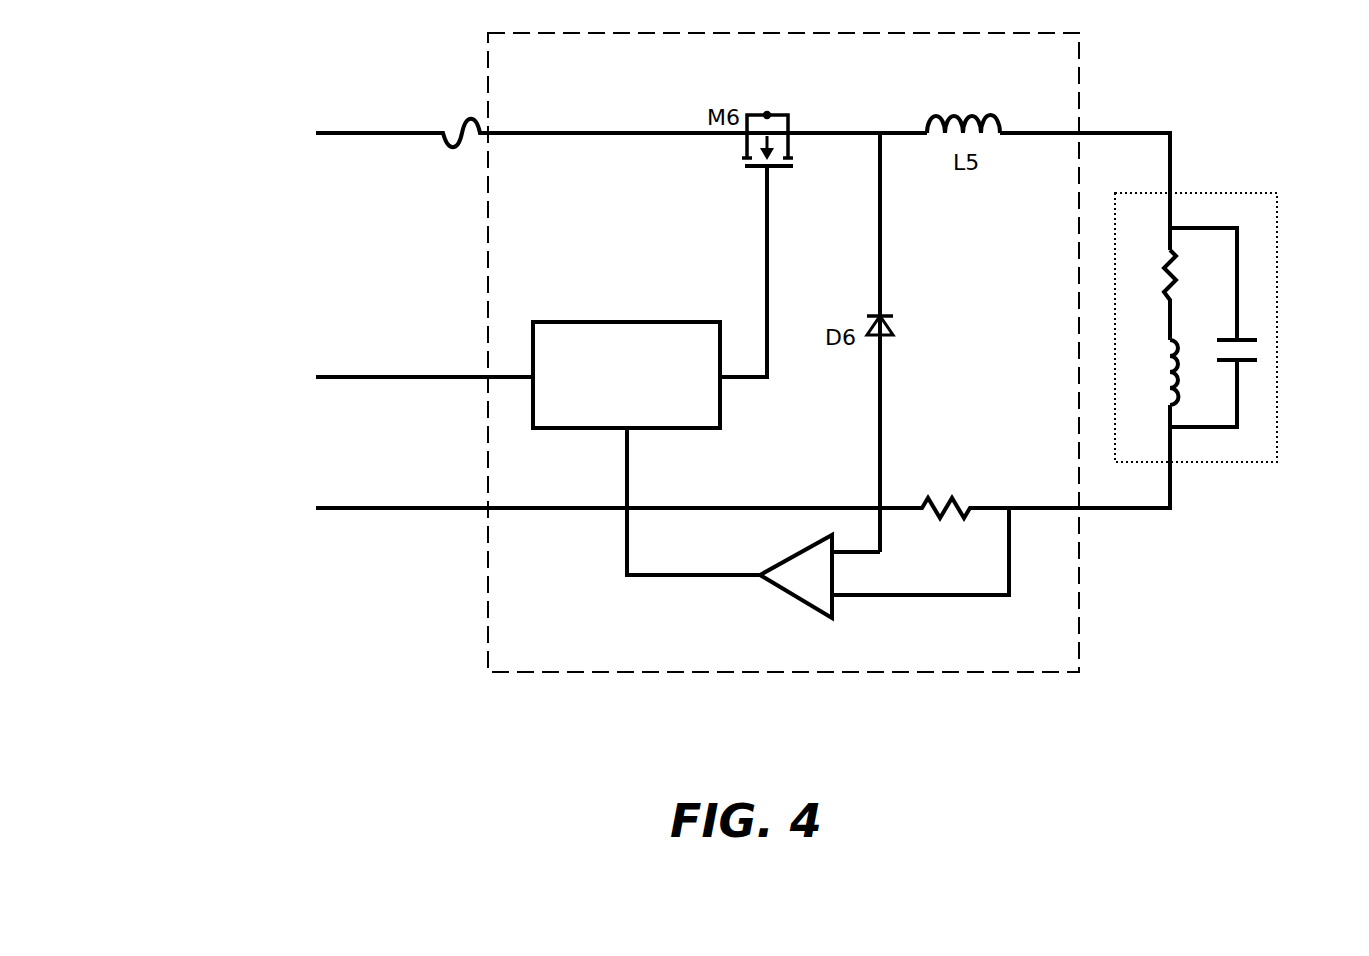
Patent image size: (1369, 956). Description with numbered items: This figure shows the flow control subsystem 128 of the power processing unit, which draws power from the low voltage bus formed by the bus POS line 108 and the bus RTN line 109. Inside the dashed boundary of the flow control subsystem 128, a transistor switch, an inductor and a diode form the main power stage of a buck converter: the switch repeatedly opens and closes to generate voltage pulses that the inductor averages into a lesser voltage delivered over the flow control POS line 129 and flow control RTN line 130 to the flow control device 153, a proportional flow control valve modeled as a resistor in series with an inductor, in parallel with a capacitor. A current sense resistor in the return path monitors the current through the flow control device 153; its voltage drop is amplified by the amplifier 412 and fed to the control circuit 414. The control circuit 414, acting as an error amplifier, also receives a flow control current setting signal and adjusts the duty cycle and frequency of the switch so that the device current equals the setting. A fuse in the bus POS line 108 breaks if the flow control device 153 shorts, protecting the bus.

The bus POS line 108 is at (357, 133).
The bus RTN line 109 is at (354, 510).
The flow control subsystem 128 is at (783, 352).
The flow control POS line 129 is at (1093, 133).
The flow control RTN line 130 is at (1081, 508).
The flow control device 153 is at (1230, 193).
The amplifier 412 is at (782, 557).
The control circuit 414 is at (620, 322).